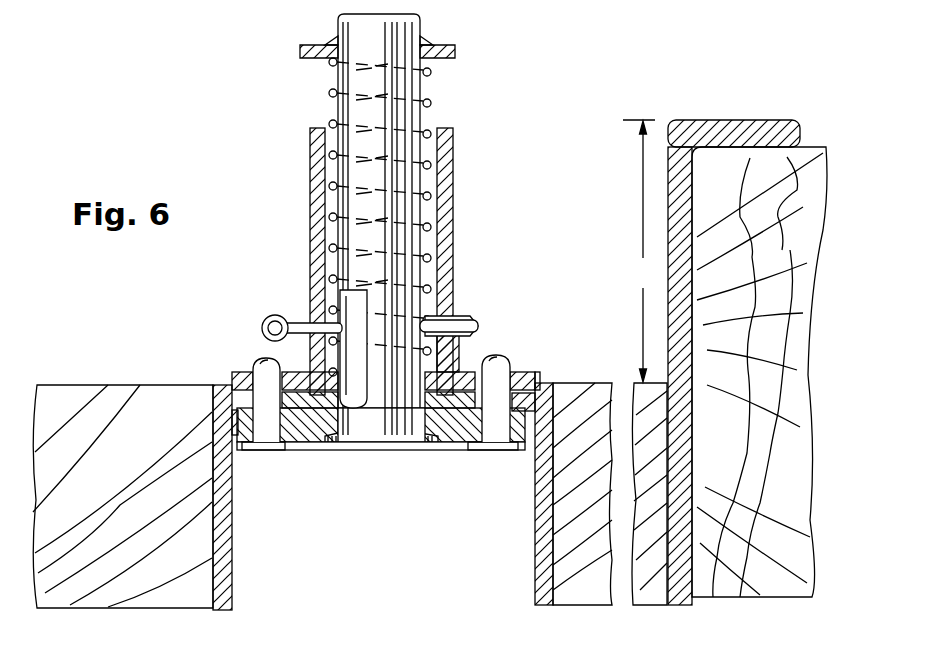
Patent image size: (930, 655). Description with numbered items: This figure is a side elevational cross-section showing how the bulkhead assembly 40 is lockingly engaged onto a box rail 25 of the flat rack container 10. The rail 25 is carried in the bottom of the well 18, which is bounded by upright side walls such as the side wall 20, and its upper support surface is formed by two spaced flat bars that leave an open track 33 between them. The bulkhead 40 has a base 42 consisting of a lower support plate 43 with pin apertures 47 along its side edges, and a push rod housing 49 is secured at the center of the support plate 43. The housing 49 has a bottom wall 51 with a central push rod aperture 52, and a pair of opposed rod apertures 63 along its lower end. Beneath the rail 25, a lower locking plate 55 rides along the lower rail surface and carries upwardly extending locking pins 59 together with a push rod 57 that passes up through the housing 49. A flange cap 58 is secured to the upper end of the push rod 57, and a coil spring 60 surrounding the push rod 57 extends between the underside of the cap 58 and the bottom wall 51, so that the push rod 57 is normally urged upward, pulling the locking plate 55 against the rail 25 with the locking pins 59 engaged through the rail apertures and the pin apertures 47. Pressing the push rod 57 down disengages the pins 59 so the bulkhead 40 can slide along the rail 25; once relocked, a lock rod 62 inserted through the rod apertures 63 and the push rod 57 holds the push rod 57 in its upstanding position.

The flat rack container 10 is at (728, 118).
The well 18 is at (580, 138).
The upright side wall 20 is at (662, 140).
The box rail 25 is at (220, 387).
The open track 33 is at (350, 420).
The bulkhead assembly 40 is at (483, 297).
The base 42 is at (542, 373).
The lower support plate 43 is at (470, 372).
The pin apertures 47 is at (258, 364).
The push rod housing 49 is at (448, 175).
The bottom wall 51 is at (455, 345).
The push rod aperture 52 is at (343, 300).
The lower locking plate 55 is at (290, 435).
The push rod 57 is at (430, 93).
The flange cap 58 is at (440, 45).
The locking pins 59 is at (245, 372).
The coil spring 60 is at (330, 95).
The lock rod 62 is at (266, 316).
The rod apertures 63 is at (262, 322).